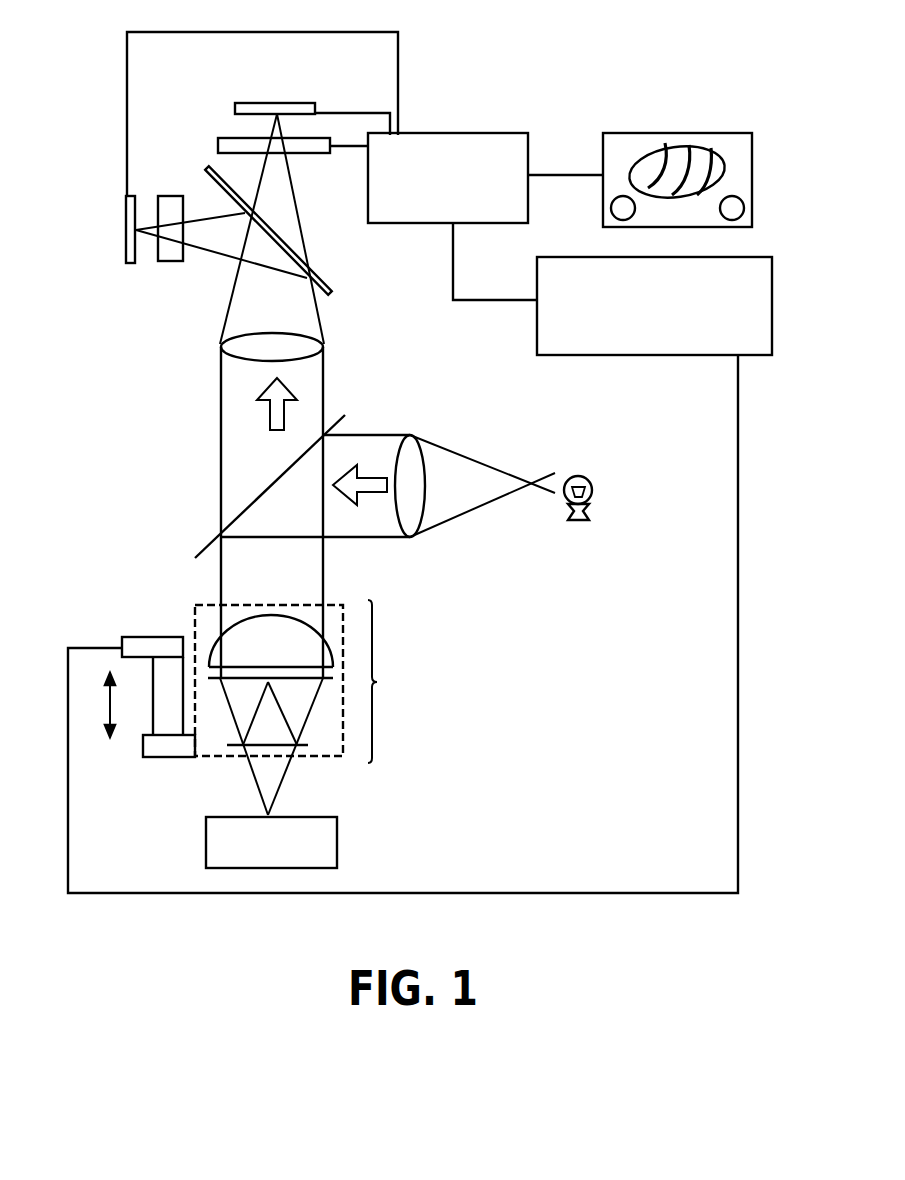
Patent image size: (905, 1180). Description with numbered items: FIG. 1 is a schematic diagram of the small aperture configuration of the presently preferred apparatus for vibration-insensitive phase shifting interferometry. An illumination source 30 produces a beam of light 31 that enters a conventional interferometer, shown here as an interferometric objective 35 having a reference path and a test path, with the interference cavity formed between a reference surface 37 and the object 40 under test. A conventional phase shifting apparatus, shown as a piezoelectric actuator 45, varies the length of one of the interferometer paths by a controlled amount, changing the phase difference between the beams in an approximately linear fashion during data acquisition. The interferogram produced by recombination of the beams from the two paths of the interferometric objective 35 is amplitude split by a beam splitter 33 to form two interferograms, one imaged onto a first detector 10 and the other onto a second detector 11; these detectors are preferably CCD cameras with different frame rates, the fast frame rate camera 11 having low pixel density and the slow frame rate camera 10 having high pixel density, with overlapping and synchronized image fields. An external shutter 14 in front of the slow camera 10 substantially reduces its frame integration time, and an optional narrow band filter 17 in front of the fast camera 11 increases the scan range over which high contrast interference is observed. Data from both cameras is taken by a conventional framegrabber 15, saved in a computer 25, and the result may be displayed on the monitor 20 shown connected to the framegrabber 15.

The first detector 10 is at (275, 94).
The second detector 11 is at (110, 229).
The external shutter 14 is at (276, 148).
The framegrabber 15 is at (488, 132).
The narrow band filter 17 is at (170, 245).
The monitor 20 is at (681, 163).
The computer 25 is at (654, 306).
The illumination source 30 is at (580, 481).
The beam of light 31 is at (358, 475).
The beam splitter 33 is at (316, 275).
The interferometric objective 35 is at (335, 601).
The reference surface 37 is at (323, 680).
The object 40 is at (206, 837).
The piezoelectric actuator 45 is at (172, 637).